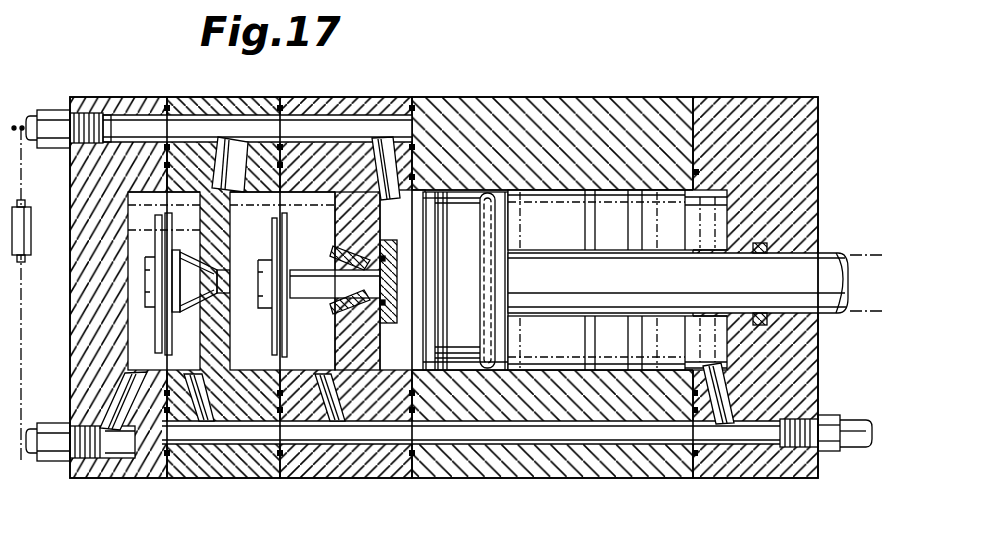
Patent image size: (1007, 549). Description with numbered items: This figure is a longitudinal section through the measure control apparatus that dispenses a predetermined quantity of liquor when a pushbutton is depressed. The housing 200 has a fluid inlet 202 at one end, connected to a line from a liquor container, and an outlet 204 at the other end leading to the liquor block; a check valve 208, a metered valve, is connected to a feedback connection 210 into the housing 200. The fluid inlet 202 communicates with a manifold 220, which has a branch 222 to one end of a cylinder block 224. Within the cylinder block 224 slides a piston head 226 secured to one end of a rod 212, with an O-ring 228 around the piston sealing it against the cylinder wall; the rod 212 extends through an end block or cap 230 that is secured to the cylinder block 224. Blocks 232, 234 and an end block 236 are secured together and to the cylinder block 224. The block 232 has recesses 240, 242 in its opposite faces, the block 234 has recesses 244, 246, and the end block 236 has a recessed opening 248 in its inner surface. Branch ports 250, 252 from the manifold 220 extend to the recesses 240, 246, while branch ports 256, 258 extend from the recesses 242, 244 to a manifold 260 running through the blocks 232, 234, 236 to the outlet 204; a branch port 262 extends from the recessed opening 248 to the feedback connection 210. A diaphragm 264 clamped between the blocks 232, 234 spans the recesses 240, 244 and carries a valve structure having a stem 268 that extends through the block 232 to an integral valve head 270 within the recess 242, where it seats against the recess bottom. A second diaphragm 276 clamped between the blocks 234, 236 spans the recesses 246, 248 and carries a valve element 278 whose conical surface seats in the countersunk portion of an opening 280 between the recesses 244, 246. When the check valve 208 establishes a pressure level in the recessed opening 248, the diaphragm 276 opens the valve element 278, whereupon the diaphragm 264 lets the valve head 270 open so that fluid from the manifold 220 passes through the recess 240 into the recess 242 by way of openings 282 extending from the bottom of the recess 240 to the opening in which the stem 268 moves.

The housing 200 is at (396, 482).
The fluid inlet 202 is at (862, 440).
The outlet 204 is at (58, 110).
The check valve 208 is at (33, 246).
The feedback connection 210 is at (57, 465).
The rod 212 is at (820, 255).
The manifold 220 is at (518, 440).
The branch 222 is at (723, 403).
The cylinder block 224 is at (632, 478).
The piston head 226 is at (473, 235).
The O-ring 228 is at (490, 350).
The end block or cap 230 is at (748, 470).
The block 232 is at (360, 470).
The block 234 is at (238, 470).
The end block 236 is at (128, 468).
The recess 240 is at (300, 392).
The recess 242 is at (398, 368).
The recess 244 is at (222, 140).
The recess 246 is at (182, 372).
The recessed opening 248 is at (160, 205).
The branch port 250 is at (333, 423).
The branch port 252 is at (203, 420).
The branch port 256 is at (378, 140).
The branch port 258 is at (230, 150).
The manifold 260 is at (257, 125).
The branch port 262 is at (127, 402).
The diaphragm 264 is at (287, 203).
The stem 268 is at (336, 284).
The valve head 270 is at (395, 293).
The diaphragm 276 is at (165, 205).
The valve element 278 is at (210, 300).
The opening 280 is at (230, 300).
The openings 282 is at (378, 236).